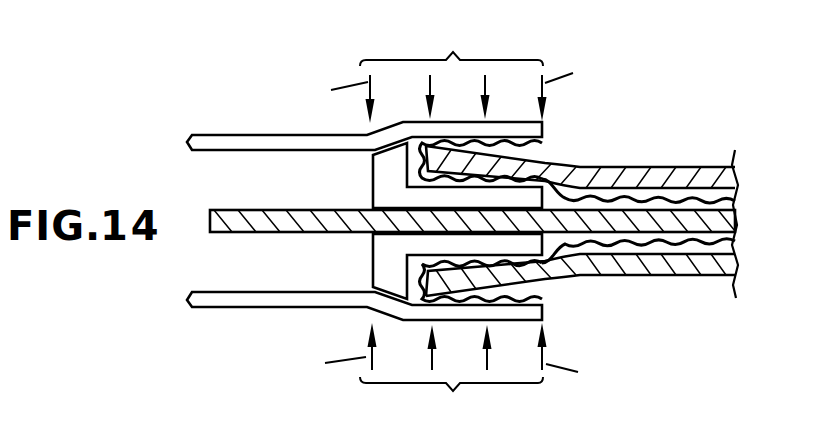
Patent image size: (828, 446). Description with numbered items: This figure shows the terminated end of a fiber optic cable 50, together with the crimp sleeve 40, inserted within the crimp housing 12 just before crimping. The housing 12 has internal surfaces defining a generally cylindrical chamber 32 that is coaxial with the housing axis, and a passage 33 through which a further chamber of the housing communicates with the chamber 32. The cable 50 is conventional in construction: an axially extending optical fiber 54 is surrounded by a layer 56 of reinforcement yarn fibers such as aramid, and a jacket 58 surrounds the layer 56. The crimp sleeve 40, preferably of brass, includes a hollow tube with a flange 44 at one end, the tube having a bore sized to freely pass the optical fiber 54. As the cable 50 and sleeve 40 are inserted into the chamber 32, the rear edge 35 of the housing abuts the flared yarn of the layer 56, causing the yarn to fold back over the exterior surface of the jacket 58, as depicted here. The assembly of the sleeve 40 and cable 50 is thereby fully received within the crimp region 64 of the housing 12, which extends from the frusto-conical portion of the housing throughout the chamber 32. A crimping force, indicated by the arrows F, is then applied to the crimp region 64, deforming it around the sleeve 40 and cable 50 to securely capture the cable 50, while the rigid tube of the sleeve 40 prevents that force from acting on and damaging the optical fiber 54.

The crimp housing 12 is at (260, 112).
The chamber 32 is at (546, 303).
The passage 33 is at (272, 192).
The rear edge 35 is at (544, 132).
The crimp sleeve 40 is at (352, 264).
The flange 44 is at (386, 173).
The fiber optic cable 50 is at (582, 206).
The optical fiber 54 is at (245, 233).
The layer of reinforcement yarn fibers 56 is at (668, 249).
The jacket 58 is at (633, 166).
The crimp region 64 is at (452, 225).